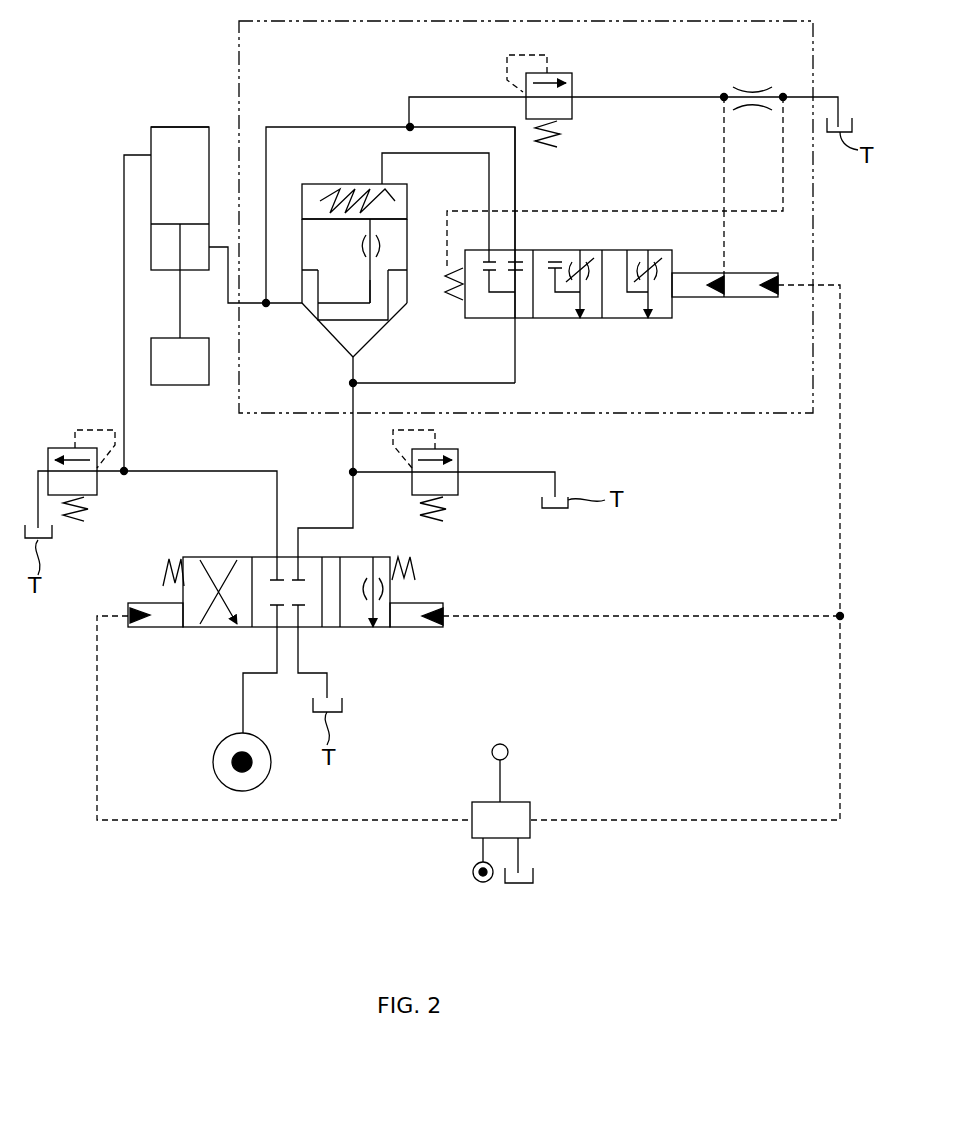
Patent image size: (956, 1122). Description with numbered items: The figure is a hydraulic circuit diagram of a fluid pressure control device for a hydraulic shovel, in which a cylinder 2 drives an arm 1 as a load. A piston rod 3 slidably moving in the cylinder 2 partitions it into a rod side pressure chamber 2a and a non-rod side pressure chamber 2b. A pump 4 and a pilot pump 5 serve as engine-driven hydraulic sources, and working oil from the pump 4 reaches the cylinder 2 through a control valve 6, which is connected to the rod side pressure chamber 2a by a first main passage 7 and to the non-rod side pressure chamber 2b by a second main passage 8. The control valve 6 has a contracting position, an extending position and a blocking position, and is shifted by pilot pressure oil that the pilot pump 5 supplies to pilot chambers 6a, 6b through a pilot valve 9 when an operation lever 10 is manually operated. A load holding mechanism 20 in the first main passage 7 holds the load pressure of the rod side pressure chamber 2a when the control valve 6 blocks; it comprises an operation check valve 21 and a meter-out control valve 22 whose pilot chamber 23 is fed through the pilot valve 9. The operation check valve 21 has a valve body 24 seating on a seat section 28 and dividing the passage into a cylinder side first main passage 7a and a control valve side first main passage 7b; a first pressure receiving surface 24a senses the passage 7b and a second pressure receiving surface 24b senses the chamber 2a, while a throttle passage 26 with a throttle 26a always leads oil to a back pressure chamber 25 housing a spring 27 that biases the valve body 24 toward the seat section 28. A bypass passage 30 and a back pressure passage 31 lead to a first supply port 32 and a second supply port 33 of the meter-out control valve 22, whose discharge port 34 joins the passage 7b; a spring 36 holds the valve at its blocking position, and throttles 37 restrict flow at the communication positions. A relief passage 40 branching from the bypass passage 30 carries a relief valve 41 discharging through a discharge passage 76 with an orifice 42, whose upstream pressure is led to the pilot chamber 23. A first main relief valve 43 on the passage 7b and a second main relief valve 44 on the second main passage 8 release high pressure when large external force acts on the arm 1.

The arm (load) 1 is at (192, 378).
The cylinder 2 is at (146, 120).
The rod side pressure chamber 2a is at (167, 263).
The non-rod side pressure chamber 2b is at (163, 145).
The piston rod 3 is at (181, 298).
The pump 4 is at (218, 765).
The pilot pump 5 is at (483, 882).
The control valve 6 is at (220, 550).
The pilot chamber 6a is at (157, 612).
The pilot chamber 6b is at (418, 608).
The first main passage 7 is at (340, 403).
The cylinder side first main passage 7a is at (250, 310).
The control valve side first main passage 7b is at (350, 440).
The second main passage 8 is at (124, 437).
The pilot valve 9 is at (532, 792).
The operation lever 10 is at (500, 743).
The load holding mechanism 20 is at (735, 413).
The operation check valve 21 is at (327, 178).
The meter-out control valve 22 is at (596, 325).
The pilot chamber 23 is at (720, 298).
The valve body 24 is at (322, 250).
The first pressure receiving surface 24a is at (340, 338).
The second pressure receiving surface 24b is at (308, 273).
The back pressure chamber 25 is at (310, 205).
The throttle passage 26 is at (371, 291).
The throttle 26a is at (378, 247).
The spring 27 is at (358, 185).
The seat section 28 is at (365, 330).
The bypass passage 30 is at (516, 170).
The back pressure passage 31 is at (470, 152).
The first supply port 32 is at (555, 238).
The second supply port 33 is at (490, 250).
The discharge port 34 is at (524, 320).
The spring 36 is at (440, 287).
The throttles 37 is at (578, 262).
The relief passage 40 is at (449, 95).
The relief valve 41 is at (578, 78).
The orifice 42 is at (752, 112).
The first main relief valve 43 is at (460, 483).
The second main relief valve 44 is at (65, 448).
The discharge passage 76 is at (666, 95).